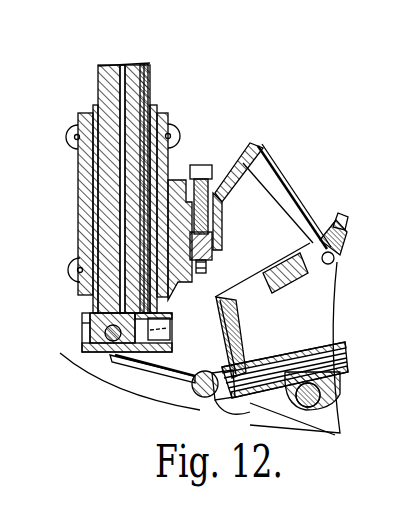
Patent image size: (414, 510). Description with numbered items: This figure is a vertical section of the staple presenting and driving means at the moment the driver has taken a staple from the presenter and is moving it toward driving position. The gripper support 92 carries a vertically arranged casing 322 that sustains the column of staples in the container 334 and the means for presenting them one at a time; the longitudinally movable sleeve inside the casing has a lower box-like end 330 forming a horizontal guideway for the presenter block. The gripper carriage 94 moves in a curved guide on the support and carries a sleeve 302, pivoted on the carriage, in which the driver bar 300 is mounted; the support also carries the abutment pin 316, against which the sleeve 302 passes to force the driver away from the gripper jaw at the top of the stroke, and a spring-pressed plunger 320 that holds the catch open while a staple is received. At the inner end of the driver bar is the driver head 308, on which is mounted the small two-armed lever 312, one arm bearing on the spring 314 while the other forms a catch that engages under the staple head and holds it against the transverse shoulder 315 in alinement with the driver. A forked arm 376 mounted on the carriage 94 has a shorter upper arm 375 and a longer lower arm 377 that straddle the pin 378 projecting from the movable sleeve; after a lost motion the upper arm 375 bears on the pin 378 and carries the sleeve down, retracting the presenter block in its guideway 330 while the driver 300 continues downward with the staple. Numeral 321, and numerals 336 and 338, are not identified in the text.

The gripper support 92 is at (246, 150).
The carriage 94 is at (318, 300).
The driver bar 300 is at (348, 357).
The sleeve 302 is at (330, 346).
The driver head 308 is at (222, 405).
The two-armed lever 312 is at (198, 397).
The spring 314 is at (205, 335).
The transverse shoulder 315 is at (205, 400).
The pin 316 is at (336, 258).
The spring-pressed plunger 320 is at (212, 213).
The bracket 321 is at (200, 170).
The casing 322 is at (176, 140).
The box-like end 330 is at (84, 352).
The container 334 is at (150, 80).
The piston 336 is at (118, 66).
The bore channel 338 is at (122, 105).
The upper arm 375 is at (202, 271).
The forked arm 376 is at (228, 352).
The lower arm 377 is at (160, 368).
The pin 378 is at (112, 341).